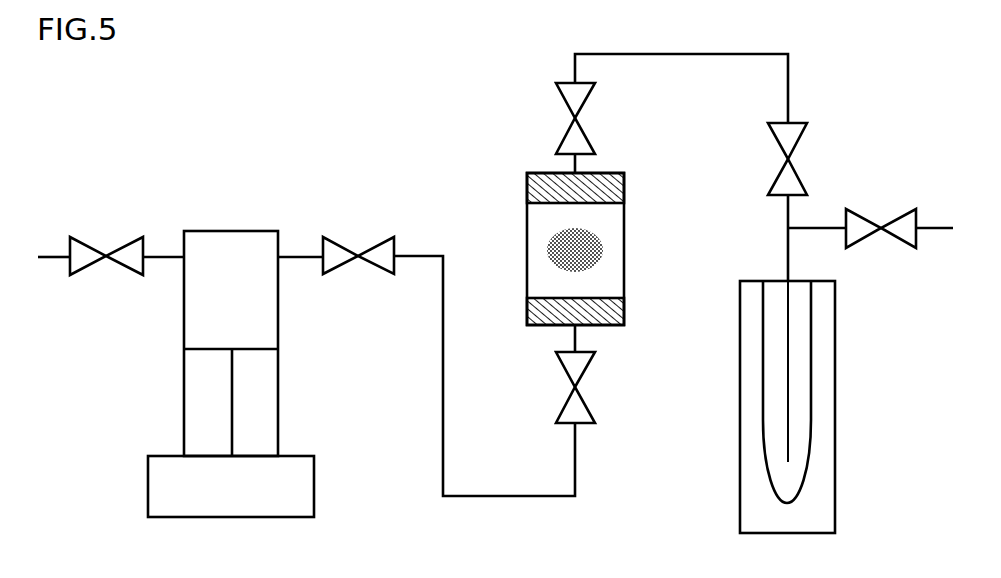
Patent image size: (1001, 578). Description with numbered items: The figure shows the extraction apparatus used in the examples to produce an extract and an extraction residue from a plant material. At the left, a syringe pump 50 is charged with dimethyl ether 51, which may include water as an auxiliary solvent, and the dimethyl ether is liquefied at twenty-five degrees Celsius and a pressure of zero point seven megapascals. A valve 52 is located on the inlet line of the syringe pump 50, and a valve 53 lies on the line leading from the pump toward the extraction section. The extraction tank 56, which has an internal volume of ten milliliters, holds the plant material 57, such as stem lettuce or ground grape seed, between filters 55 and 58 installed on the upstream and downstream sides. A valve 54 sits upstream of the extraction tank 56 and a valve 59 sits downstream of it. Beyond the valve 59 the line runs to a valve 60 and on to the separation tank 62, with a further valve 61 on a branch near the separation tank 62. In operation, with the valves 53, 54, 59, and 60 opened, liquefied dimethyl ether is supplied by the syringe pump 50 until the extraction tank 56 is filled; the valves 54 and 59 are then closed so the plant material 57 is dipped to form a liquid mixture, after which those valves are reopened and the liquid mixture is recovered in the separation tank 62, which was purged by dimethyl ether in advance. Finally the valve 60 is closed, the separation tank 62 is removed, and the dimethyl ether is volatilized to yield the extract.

The syringe pump 50 is at (158, 483).
The dimethyl ether 51 is at (232, 231).
The valve 52 is at (124, 238).
The valve 53 is at (372, 242).
The valve 54 is at (587, 405).
The filter 55 is at (625, 311).
The extraction tank 56 is at (625, 253).
The plant material 57 is at (553, 258).
The filter 58 is at (625, 181).
The valve 59 is at (558, 90).
The valve 60 is at (803, 135).
The valve 61 is at (905, 212).
The separation tank 62 is at (825, 500).